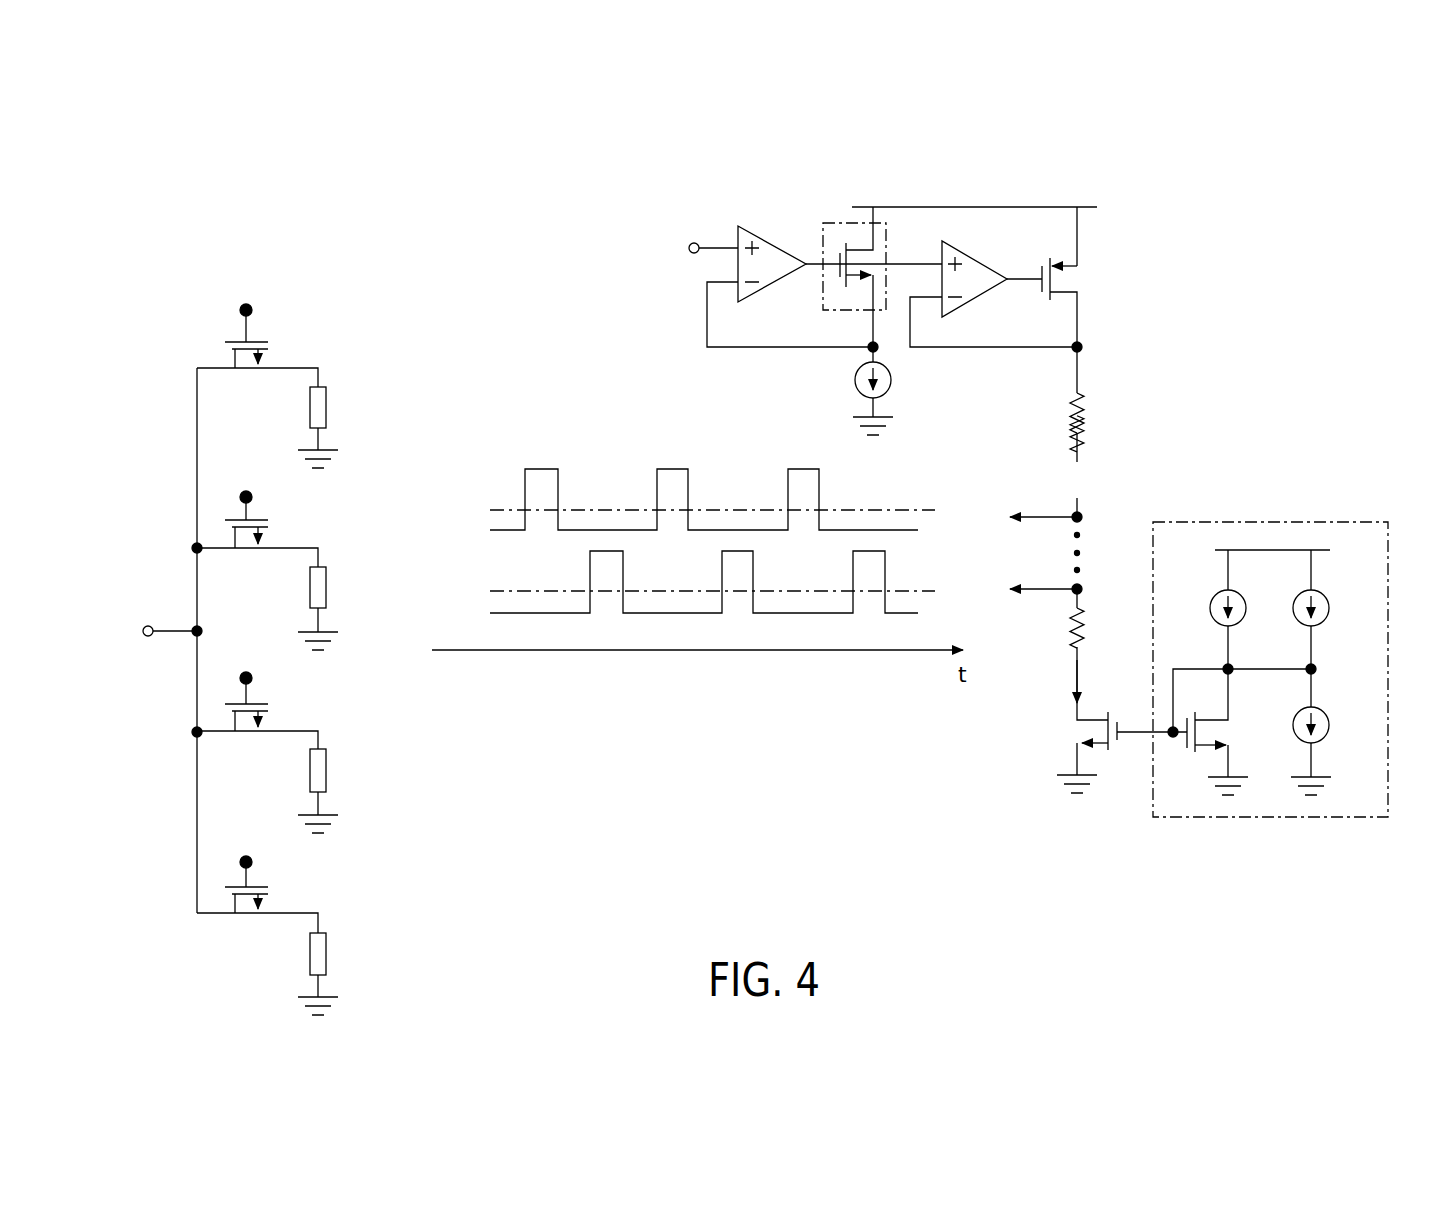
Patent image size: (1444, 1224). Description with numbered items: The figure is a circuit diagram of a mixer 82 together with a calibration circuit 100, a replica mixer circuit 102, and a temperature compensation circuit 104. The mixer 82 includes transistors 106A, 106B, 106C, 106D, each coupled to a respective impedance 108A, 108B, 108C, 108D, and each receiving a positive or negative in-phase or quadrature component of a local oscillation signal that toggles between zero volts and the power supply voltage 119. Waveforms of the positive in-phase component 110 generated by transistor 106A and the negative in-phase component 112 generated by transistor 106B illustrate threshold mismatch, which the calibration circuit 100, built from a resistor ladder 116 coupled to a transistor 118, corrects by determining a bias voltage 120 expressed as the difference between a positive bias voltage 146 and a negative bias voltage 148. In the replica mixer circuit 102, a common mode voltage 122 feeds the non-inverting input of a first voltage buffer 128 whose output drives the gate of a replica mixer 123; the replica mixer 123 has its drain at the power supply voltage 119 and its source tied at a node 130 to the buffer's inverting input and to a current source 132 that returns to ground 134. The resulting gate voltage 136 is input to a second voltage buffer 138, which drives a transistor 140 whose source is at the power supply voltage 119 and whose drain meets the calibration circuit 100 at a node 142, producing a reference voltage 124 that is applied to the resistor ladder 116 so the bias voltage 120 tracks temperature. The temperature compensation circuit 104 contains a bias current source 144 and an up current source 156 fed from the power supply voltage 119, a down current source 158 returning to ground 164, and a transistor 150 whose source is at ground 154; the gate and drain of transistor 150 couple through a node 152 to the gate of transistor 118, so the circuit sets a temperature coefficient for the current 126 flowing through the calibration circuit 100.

The mixer 82 is at (162, 278).
The calibration circuit 100 is at (1050, 658).
The replica mixer circuit 102 is at (638, 187).
The temperature compensation circuit 104 is at (1388, 498).
The transistor 106A is at (263, 340).
The transistor 106B is at (263, 520).
The transistor 106C is at (263, 704).
The transistor 106D is at (263, 887).
The impedance 108A is at (309, 408).
The impedance 108B is at (309, 589).
The impedance 108C is at (309, 770).
The impedance 108D is at (309, 953).
The positive in-phase component 110 is at (495, 457).
The negative in-phase component 112 is at (495, 565).
The resistor ladder 116 is at (1062, 433).
The transistor 118 is at (1108, 748).
The power supply voltage 119 is at (1130, 195).
The bias voltage 120 is at (1082, 520).
The common mode voltage 122 is at (657, 270).
The replica mixer 123 is at (837, 270).
The reference voltage 124 is at (1127, 336).
The current 126 is at (1112, 660).
The first voltage buffer 128 is at (739, 240).
The node 130 is at (870, 350).
The current source 132 is at (860, 393).
The ground 134 is at (888, 418).
The gate voltage 136 is at (795, 215).
The second voltage buffer 138 is at (976, 258).
The transistor 140 is at (1068, 290).
The node 142 is at (1075, 352).
The bias current source 144 is at (1212, 595).
The positive bias voltage 146 is at (990, 497).
The negative bias voltage 148 is at (986, 578).
The transistor 150 is at (1212, 722).
The node 152 is at (1173, 738).
The ground 154 is at (1235, 790).
The up current source 156 is at (1295, 622).
The down current source 158 is at (1323, 740).
The ground 164 is at (1318, 790).